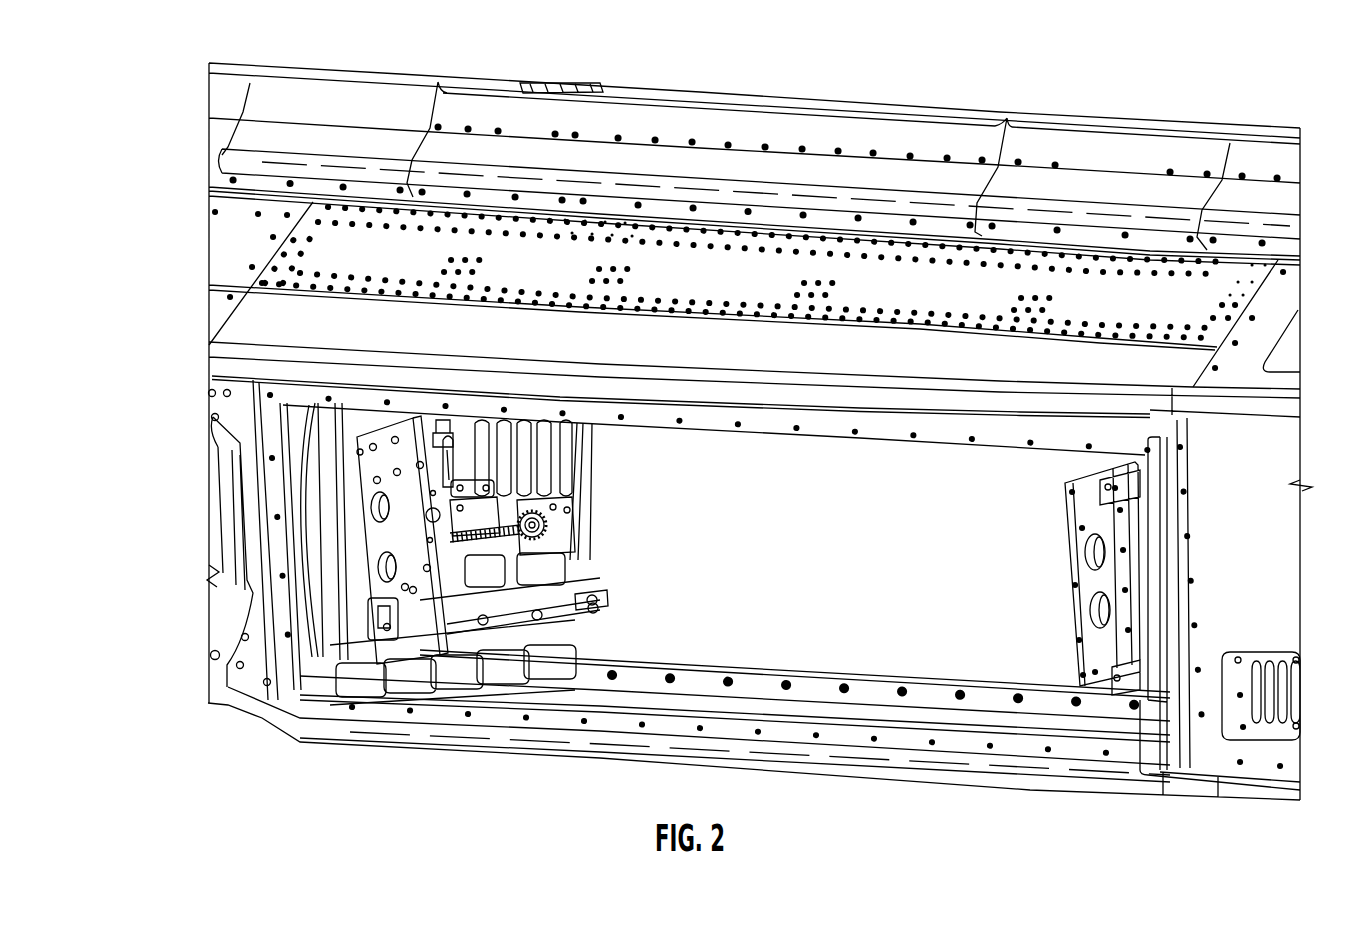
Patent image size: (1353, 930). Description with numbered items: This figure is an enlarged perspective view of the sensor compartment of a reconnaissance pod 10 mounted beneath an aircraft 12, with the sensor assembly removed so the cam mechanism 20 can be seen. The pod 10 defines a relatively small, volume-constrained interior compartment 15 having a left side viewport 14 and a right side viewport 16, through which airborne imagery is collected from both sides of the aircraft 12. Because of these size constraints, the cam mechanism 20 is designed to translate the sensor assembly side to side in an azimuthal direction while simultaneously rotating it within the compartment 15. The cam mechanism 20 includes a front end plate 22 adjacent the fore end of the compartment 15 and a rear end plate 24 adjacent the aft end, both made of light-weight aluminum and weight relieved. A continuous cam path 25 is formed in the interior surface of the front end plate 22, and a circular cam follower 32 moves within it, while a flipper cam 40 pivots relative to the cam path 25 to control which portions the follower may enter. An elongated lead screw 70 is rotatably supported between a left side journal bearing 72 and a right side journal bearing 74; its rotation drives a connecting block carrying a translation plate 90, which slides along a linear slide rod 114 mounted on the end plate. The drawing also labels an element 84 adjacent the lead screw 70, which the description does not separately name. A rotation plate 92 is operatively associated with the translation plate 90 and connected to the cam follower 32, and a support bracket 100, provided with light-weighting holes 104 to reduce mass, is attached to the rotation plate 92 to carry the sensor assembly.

The reconnaissance pod 10 is at (278, 333).
The aircraft 12 is at (866, 97).
The left side viewport 14 is at (672, 735).
The interior compartment 15 is at (837, 717).
The right side viewport 16 is at (864, 682).
The cam mechanism 20 is at (524, 560).
The front end plate 22 is at (327, 541).
The rear end plate 24 is at (1152, 718).
The cam path 25 is at (463, 457).
The cam follower 32 is at (453, 487).
The flipper cam 40 is at (457, 492).
The lead screw 70 is at (505, 600).
The left side journal bearing 72 is at (352, 573).
The right side journal bearing 74 is at (455, 520).
The drive screw and gear 84 is at (578, 566).
The translation plate 90 is at (430, 420).
The rotation plate 92 is at (425, 575).
The support bracket 100 is at (1082, 668).
The light-weighting holes 104 is at (1085, 553).
The linear slide rod 114 is at (585, 613).